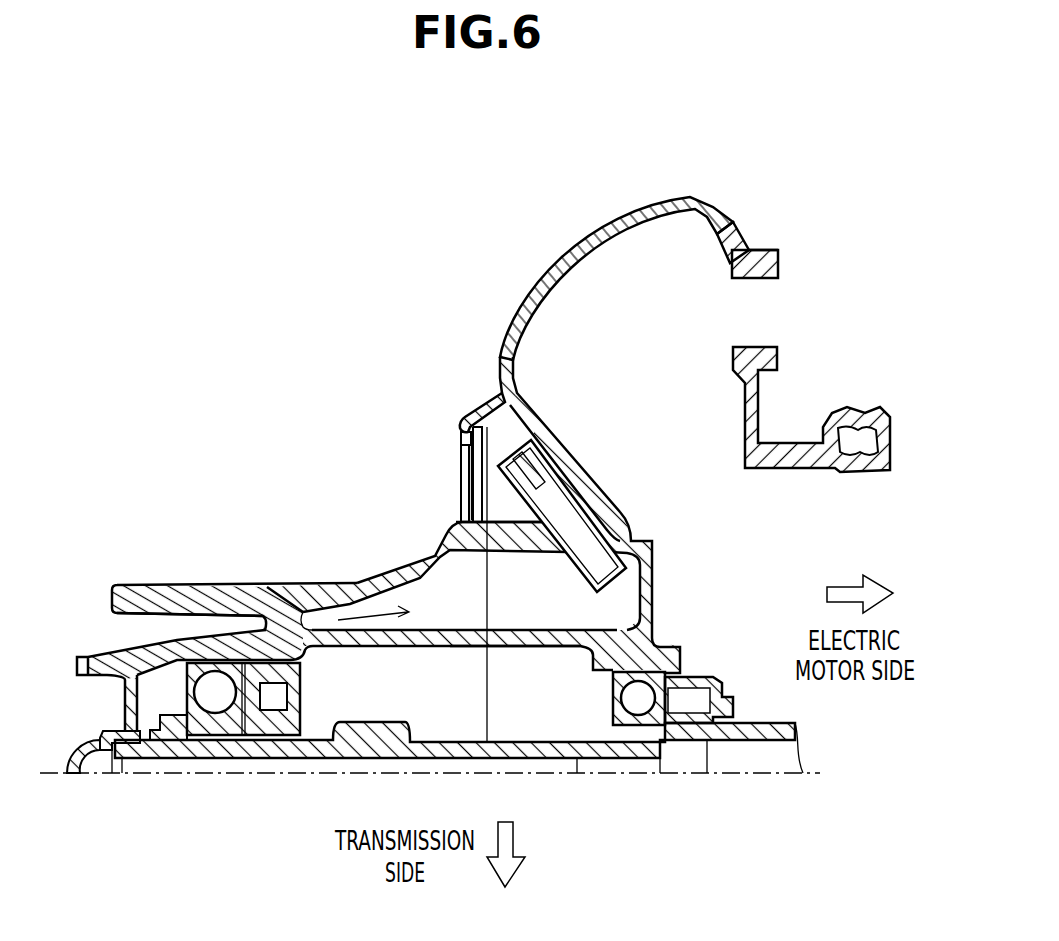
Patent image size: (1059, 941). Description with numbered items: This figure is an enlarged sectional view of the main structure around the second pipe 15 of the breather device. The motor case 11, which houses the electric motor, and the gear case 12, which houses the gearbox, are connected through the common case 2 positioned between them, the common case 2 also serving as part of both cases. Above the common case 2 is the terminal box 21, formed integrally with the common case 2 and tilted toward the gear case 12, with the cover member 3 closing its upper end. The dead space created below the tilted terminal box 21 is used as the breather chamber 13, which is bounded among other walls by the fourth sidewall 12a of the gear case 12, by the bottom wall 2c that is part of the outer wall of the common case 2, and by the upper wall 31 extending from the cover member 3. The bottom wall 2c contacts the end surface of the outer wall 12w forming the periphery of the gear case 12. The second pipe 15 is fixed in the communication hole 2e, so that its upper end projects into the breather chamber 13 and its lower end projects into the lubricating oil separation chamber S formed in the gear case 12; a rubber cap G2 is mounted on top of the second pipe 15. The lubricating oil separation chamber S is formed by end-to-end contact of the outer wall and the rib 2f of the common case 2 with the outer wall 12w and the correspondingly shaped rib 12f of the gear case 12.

The common case 2 is at (795, 259).
The bottom wall 2c is at (478, 592).
The communication hole 2e is at (600, 526).
The rib 2f is at (530, 640).
The cover member 3 is at (561, 241).
The motor case 11 is at (858, 391).
The gear case 12 is at (144, 572).
The fourth sidewall 12a is at (460, 458).
The rib 12f is at (372, 645).
The outer wall 12w is at (472, 556).
The breather chamber 13 is at (508, 420).
The second pipe 15 is at (460, 518).
The terminal box 21 is at (752, 250).
The upper wall 31 is at (480, 403).
The rubber cap G2 is at (466, 486).
The lubricating oil separation chamber S is at (277, 588).